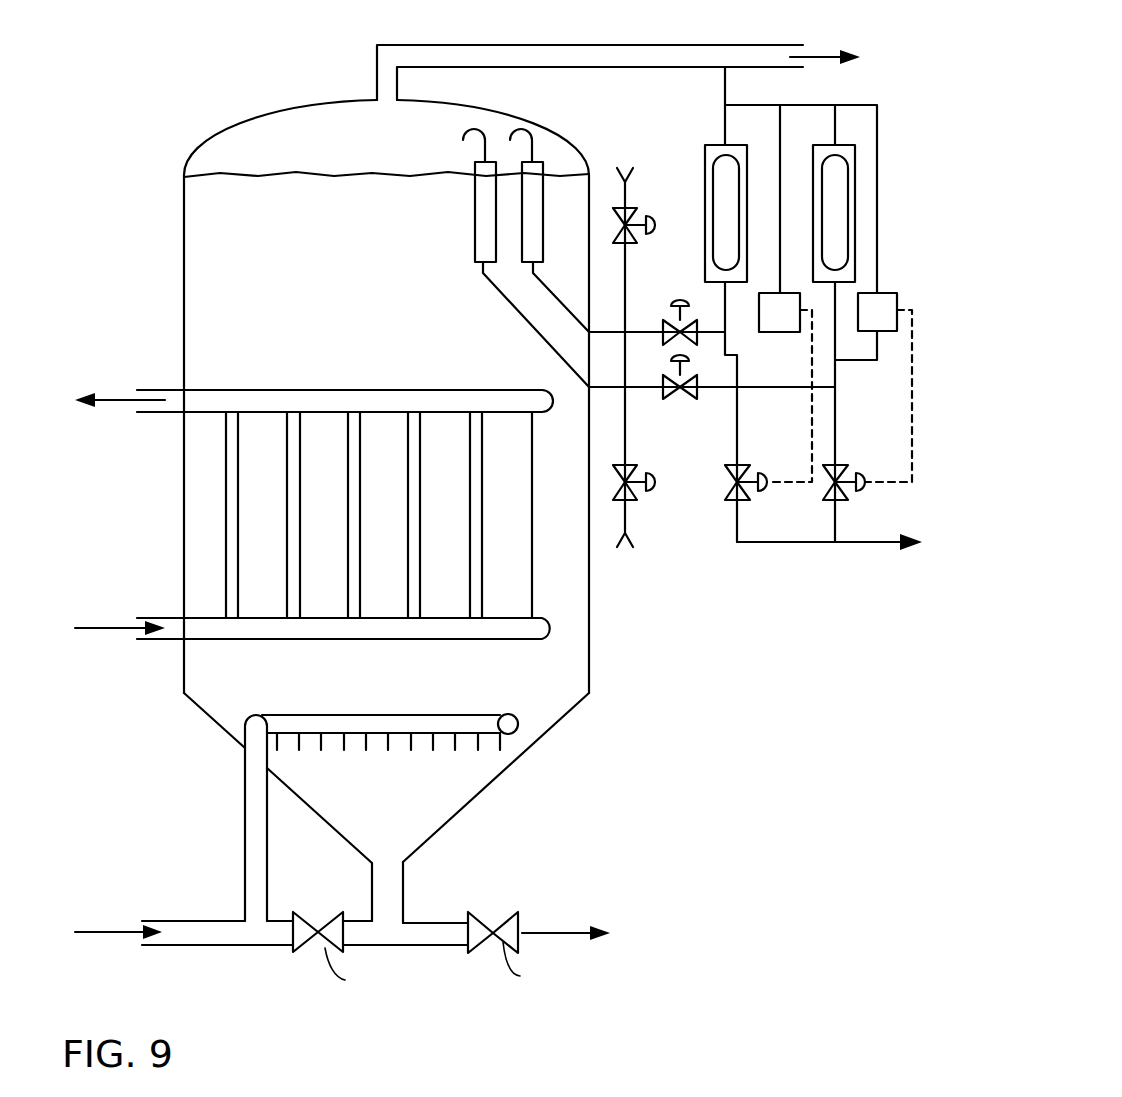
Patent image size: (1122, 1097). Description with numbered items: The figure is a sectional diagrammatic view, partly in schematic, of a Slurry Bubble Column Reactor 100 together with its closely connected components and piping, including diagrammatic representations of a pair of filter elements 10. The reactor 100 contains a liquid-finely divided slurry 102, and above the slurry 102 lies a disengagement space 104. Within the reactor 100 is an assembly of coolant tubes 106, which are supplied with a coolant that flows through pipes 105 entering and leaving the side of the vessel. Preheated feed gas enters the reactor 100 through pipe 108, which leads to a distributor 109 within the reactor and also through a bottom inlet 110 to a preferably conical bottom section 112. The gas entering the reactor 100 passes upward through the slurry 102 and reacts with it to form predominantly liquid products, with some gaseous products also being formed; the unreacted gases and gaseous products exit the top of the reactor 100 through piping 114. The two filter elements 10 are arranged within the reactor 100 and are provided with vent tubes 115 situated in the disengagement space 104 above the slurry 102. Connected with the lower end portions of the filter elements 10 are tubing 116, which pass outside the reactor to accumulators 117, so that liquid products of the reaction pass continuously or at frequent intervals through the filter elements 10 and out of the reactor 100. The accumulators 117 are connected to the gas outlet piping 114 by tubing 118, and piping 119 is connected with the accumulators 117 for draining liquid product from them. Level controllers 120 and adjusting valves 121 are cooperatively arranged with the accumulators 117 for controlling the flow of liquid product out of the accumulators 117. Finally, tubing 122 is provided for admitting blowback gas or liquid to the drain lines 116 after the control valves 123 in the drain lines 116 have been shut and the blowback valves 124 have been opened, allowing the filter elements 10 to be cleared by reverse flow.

The Slurry Bubble Column Reactor 100 is at (165, 256).
The slurry 102 is at (388, 291).
The disengagement space 104 is at (407, 153).
The pipes 105 is at (288, 400).
The coolant tubes 106 is at (237, 498).
The pipe 108 is at (250, 835).
The distributor 109 is at (414, 720).
The bottom inlet 110 is at (390, 862).
The conical bottom section 112 is at (522, 758).
The piping 114 is at (546, 50).
The vent tubes 115 is at (486, 130).
The filter elements 10 is at (485, 207).
The tubing 116 is at (545, 290).
The accumulators 117 is at (716, 150).
The tubing 118 is at (722, 84).
The piping 119 is at (738, 368).
The level controllers 120 is at (762, 330).
The adjusting valves 121 is at (742, 470).
The tubing 122 is at (628, 275).
The control valves 123 is at (693, 322).
The blowback valves 124 is at (640, 212).